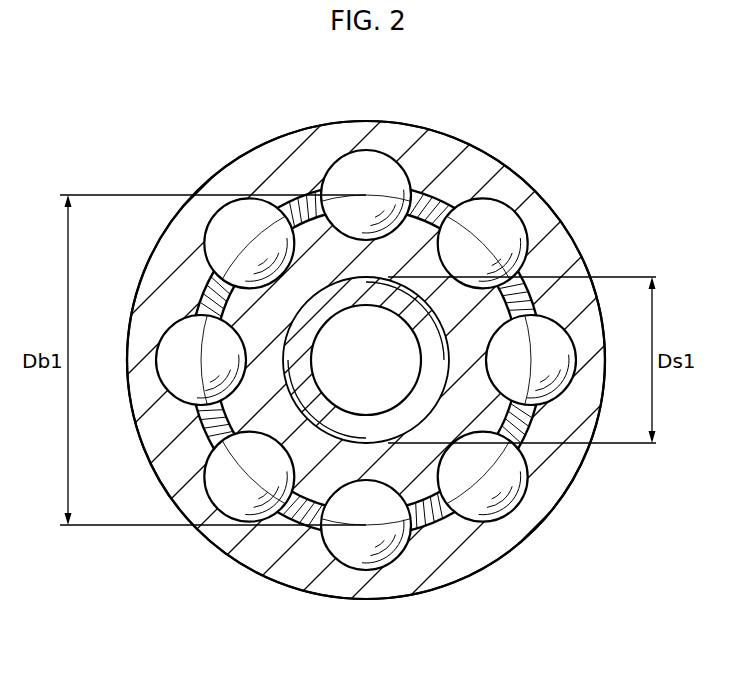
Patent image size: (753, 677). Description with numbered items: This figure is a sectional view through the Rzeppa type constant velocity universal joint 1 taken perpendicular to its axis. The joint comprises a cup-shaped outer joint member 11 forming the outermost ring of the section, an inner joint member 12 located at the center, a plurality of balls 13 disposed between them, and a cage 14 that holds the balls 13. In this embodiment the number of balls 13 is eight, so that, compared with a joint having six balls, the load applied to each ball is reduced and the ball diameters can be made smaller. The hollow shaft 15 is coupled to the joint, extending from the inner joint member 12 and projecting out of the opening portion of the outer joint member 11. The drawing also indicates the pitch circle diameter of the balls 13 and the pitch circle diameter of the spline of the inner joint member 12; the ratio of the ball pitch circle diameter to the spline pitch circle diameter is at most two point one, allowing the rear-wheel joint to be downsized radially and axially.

The Rzeppa type constant velocity universal joint 1 is at (223, 147).
The outer joint member 11 is at (465, 142).
The inner joint member 12 is at (440, 523).
The balls 13 is at (362, 165).
The cage 14 is at (197, 292).
The hollow shaft 15 is at (433, 304).